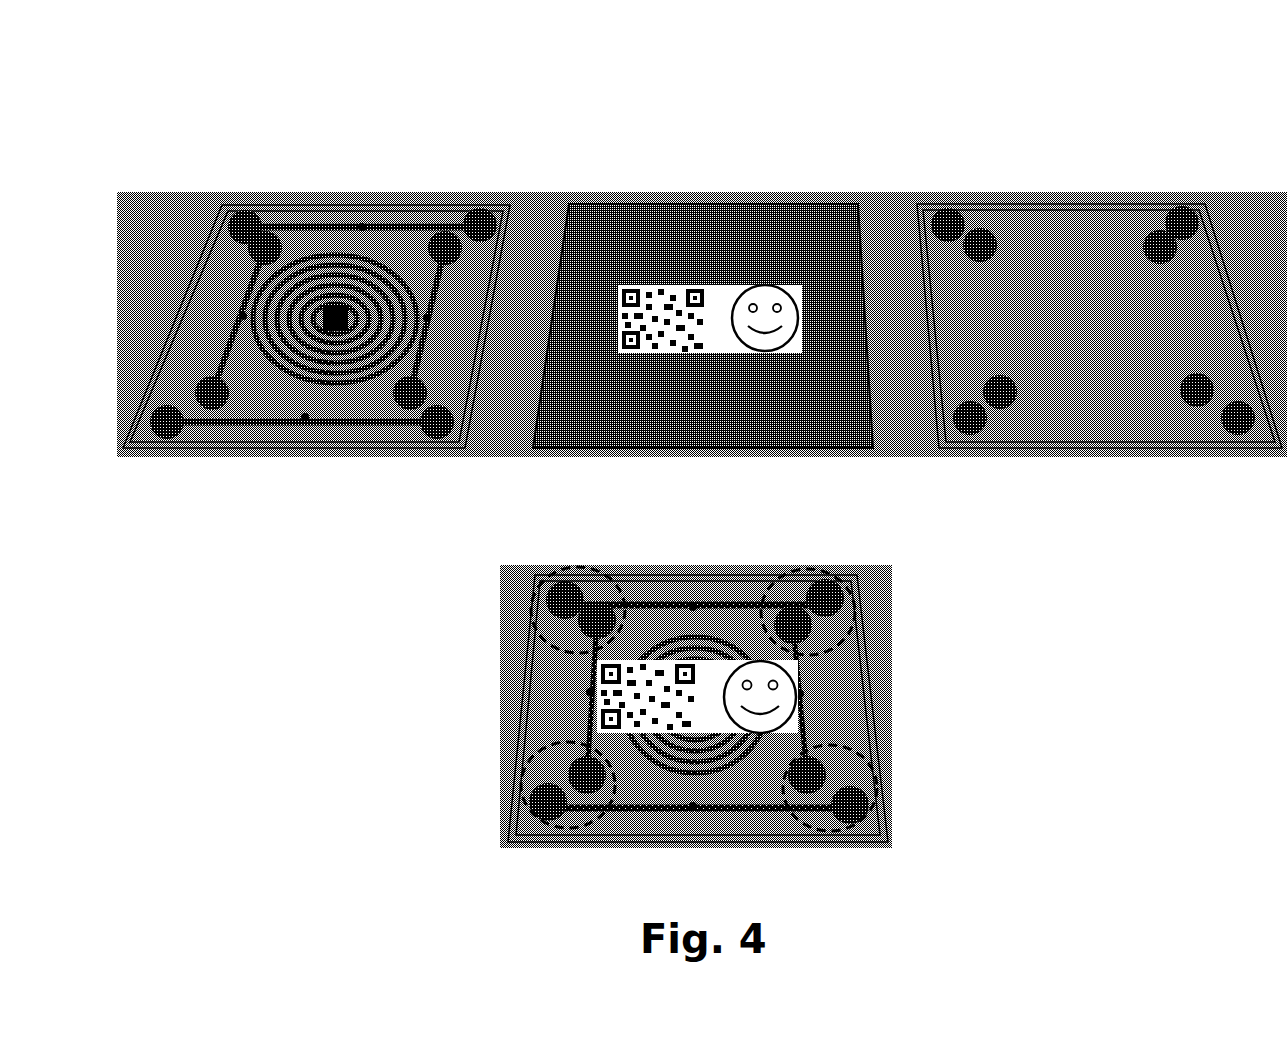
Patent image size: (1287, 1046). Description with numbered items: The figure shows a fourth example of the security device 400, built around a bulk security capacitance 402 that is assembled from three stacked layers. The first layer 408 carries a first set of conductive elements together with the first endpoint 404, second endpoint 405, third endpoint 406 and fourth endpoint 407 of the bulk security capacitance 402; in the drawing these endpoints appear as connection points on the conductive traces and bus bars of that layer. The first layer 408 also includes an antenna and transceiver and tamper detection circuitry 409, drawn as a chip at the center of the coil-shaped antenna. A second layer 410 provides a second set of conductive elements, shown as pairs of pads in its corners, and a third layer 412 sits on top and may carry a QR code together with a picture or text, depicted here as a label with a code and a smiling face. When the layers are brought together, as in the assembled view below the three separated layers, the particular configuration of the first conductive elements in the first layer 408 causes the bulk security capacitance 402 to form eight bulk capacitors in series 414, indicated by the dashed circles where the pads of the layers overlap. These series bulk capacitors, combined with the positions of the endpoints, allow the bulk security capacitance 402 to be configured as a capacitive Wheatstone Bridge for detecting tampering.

The security device 400 is at (167, 120).
The bulk security capacitance 402 is at (697, 563).
The first endpoint 404 is at (238, 312).
The second endpoint 405 is at (356, 225).
The third endpoint 406 is at (431, 313).
The fourth endpoint 407 is at (301, 420).
The first layer 408 is at (398, 203).
The antenna and transceiver and tamper detection circuitry 409 is at (320, 322).
The second layer 410 is at (1062, 202).
The third layer 412 is at (710, 202).
The bulk capacitors in series 414 is at (530, 587).